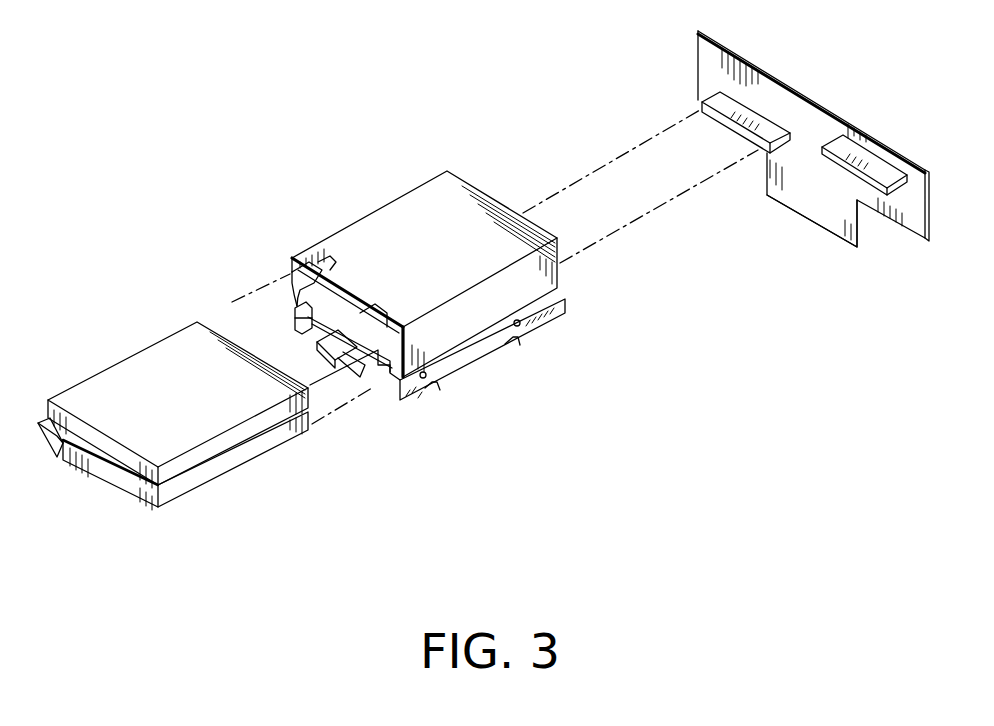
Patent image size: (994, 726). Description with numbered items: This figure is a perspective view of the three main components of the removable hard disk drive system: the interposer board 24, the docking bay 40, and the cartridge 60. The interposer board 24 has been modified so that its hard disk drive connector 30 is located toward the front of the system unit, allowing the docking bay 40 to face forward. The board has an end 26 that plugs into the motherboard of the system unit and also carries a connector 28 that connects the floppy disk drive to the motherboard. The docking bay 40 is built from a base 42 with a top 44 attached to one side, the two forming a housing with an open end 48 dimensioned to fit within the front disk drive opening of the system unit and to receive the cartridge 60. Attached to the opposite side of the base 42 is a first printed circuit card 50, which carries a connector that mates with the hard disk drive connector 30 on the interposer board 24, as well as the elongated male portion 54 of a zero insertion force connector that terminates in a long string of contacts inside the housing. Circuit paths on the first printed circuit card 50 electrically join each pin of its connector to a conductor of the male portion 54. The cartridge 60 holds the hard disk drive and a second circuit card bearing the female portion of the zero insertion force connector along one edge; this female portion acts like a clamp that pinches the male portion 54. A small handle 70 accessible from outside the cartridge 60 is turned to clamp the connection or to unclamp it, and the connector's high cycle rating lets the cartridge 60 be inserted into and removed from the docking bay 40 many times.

The interposer board 24 is at (818, 108).
The end 26 is at (815, 225).
The connector 28 is at (875, 167).
The connector 30 is at (720, 96).
The docking bay 40 is at (410, 212).
The base 42 is at (385, 350).
The top 44 is at (530, 280).
The open end 48 is at (290, 275).
The first printed circuit card 50 is at (290, 322).
The male portion of zero insertion force connector 54 is at (323, 257).
The cartridge 60 is at (197, 477).
The handle 70 is at (47, 450).